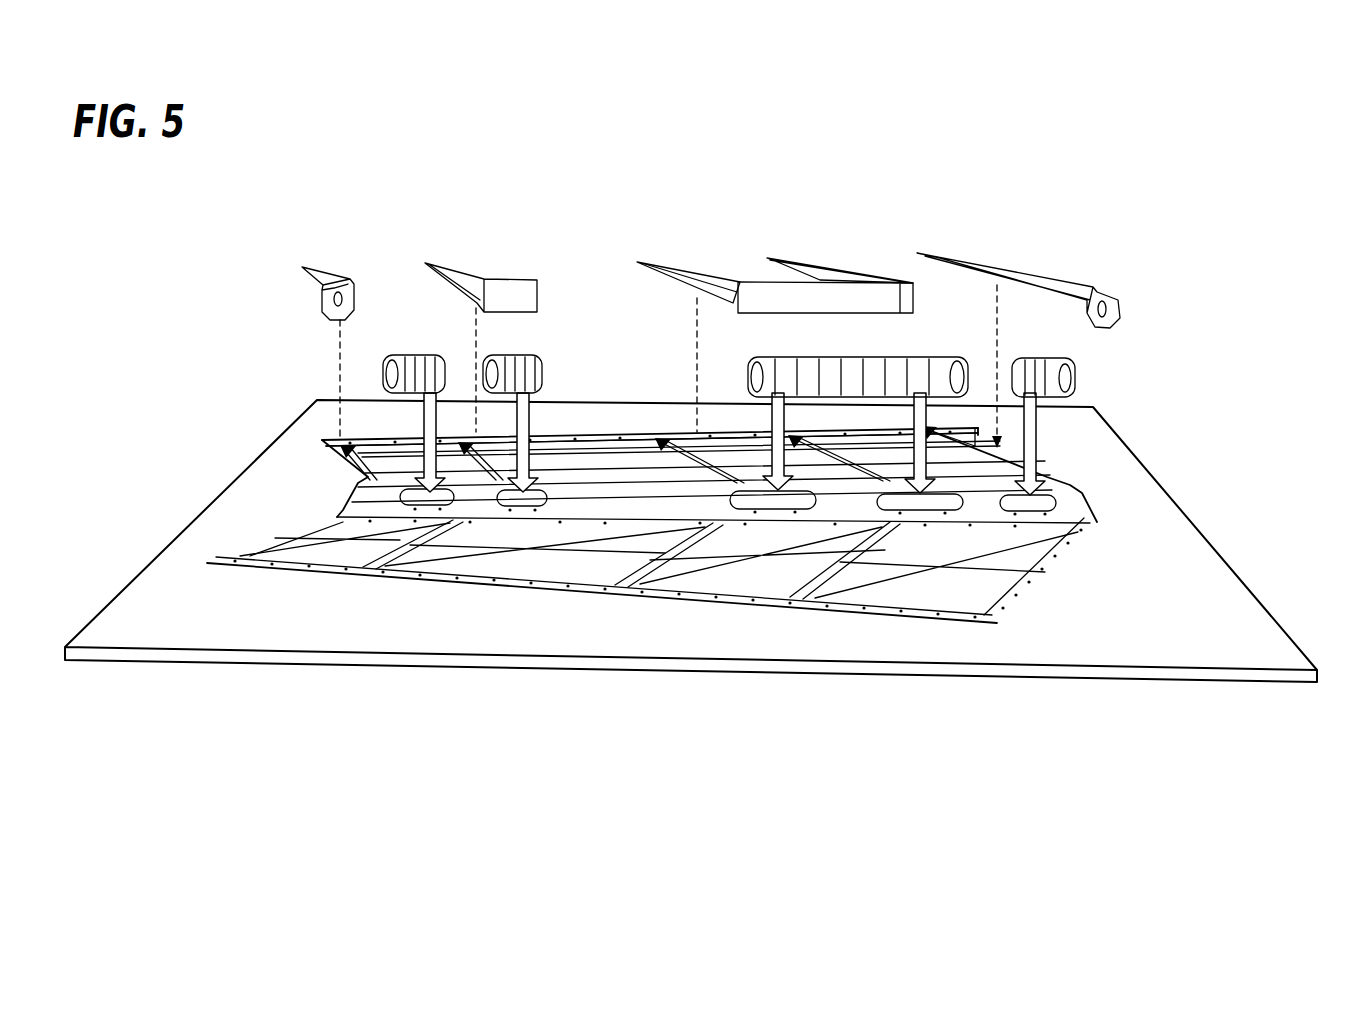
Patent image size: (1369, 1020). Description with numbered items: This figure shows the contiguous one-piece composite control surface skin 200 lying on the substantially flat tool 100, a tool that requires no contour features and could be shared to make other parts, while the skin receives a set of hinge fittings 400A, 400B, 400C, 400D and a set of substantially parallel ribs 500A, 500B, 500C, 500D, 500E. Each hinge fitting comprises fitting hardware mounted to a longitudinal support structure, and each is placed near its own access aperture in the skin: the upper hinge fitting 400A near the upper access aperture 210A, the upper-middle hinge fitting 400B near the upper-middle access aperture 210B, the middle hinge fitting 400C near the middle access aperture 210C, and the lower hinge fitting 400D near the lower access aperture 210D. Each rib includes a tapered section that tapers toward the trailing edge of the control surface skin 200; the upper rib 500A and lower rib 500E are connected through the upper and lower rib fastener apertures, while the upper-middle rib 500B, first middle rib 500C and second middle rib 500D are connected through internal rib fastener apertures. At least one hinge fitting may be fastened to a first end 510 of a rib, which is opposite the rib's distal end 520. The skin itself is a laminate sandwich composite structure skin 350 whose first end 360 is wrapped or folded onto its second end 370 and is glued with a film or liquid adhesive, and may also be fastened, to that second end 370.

The substantially flat tool 100 is at (691, 541).
The control surface skin 200 is at (1067, 487).
The upper access aperture 210A is at (405, 490).
The upper-middle access aperture 210B is at (497, 507).
The middle access aperture 210C is at (813, 507).
The lower access aperture 210D is at (1060, 505).
The laminate sandwich composite structure skin 350 is at (613, 410).
The first end 360 is at (477, 583).
The second end 370 is at (555, 432).
The upper hinge fitting 400A is at (402, 353).
The upper-middle hinge fitting 400B is at (530, 353).
The middle hinge fitting 400C is at (817, 353).
The lower hinge fitting 400D is at (1047, 360).
The upper rib 500A is at (327, 270).
The upper-middle rib 500B is at (477, 275).
The first middle rib 500C is at (660, 263).
The second middle rib 500D is at (820, 278).
The lower rib 500E is at (1070, 280).
The first end 510 is at (737, 292).
The distal end 520 is at (667, 263).